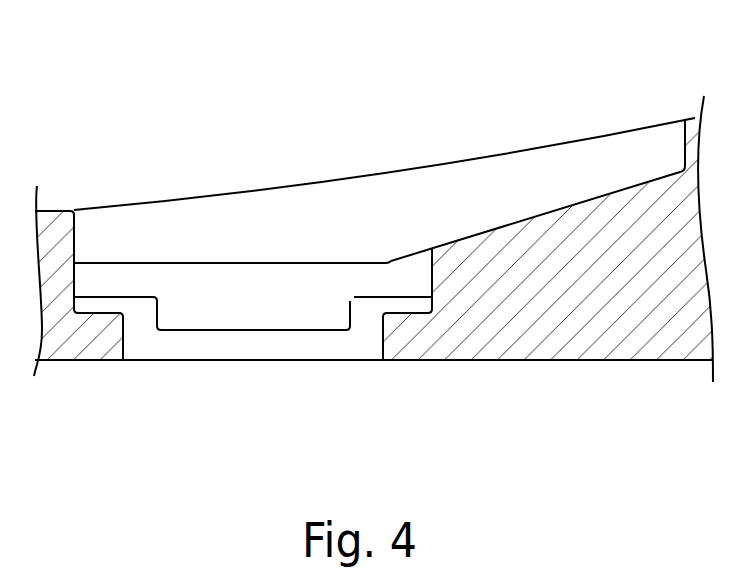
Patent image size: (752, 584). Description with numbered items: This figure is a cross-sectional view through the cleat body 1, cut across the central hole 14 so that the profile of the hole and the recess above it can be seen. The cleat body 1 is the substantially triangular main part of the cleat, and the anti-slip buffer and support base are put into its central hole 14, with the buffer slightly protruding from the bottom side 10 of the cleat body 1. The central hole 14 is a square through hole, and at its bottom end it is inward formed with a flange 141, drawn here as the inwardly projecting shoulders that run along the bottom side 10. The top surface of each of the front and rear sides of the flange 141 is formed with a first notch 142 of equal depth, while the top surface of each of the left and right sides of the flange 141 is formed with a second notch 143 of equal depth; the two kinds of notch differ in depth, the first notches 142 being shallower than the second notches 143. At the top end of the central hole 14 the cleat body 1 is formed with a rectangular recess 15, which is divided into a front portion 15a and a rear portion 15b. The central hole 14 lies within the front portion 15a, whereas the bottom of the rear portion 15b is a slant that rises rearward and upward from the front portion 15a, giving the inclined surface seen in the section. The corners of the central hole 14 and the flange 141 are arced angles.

The cleat body 1 is at (622, 325).
The bottom side 10 is at (513, 360).
The central hole 14 is at (253, 350).
The flange 141 is at (125, 328).
The first notch 142 is at (100, 313).
The second notch 143 is at (217, 330).
The rectangular recess 15 is at (357, 200).
The front portion 15a is at (264, 263).
The rear portion 15b is at (517, 223).